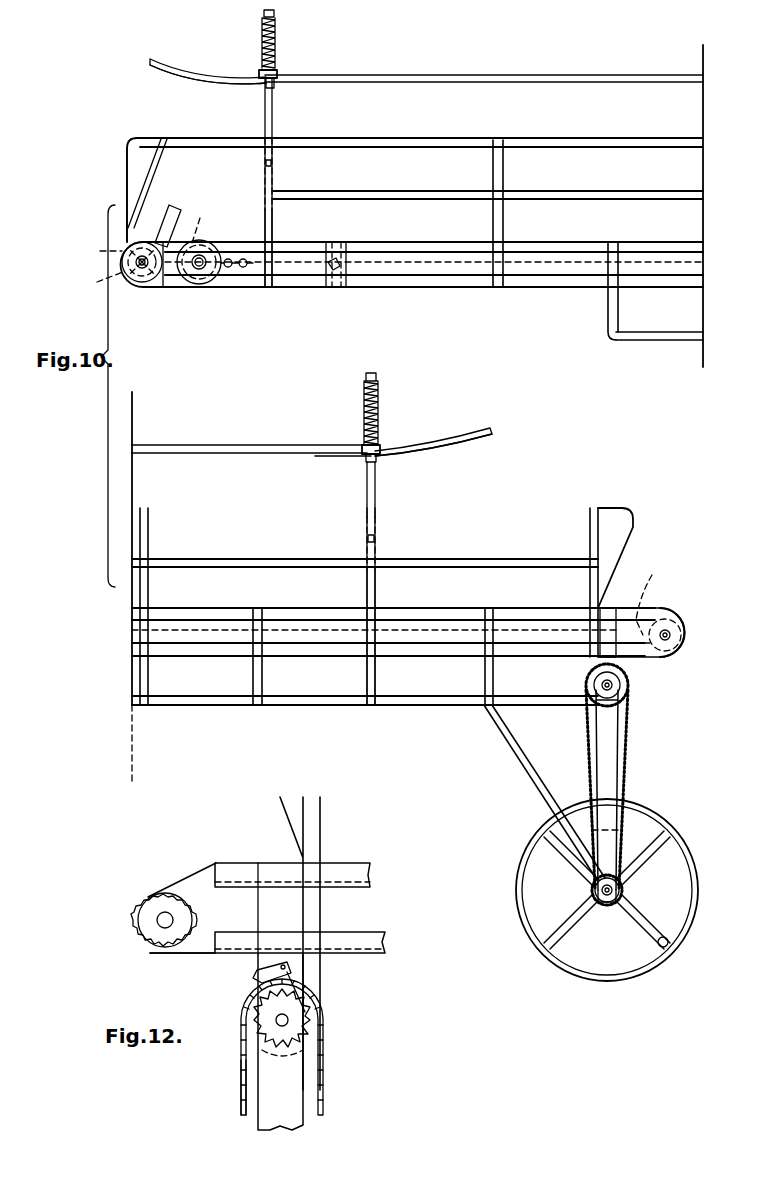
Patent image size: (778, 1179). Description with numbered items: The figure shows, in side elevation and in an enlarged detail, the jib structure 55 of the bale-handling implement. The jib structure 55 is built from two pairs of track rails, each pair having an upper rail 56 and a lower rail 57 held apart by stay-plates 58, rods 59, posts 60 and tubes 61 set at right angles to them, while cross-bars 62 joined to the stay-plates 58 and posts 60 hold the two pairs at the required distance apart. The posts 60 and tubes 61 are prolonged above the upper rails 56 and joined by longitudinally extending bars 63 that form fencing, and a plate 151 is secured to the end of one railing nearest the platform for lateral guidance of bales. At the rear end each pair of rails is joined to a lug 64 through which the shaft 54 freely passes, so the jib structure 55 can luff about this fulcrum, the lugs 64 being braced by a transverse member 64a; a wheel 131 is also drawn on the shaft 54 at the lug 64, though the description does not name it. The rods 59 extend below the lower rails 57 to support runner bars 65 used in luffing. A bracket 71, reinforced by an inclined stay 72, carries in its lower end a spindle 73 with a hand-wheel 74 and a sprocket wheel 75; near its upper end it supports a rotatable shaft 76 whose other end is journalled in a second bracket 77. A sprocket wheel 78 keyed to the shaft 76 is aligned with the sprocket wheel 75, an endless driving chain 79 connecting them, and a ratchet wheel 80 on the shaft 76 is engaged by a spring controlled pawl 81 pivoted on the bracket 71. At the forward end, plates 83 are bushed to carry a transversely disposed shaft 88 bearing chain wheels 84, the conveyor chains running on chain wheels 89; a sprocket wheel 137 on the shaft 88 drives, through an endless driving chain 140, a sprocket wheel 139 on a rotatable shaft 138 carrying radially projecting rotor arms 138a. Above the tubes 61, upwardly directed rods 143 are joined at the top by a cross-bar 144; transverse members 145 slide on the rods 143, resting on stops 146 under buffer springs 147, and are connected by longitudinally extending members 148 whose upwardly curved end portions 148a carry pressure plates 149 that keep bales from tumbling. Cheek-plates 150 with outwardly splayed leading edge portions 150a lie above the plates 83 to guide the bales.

In FIG. 10, the shaft 54 is at (673, 633).
In FIG. 12, the shaft 54 is at (160, 922).
In FIG. 10, the jib structure 55 is at (548, 105).
In FIG. 12, the jib structure 55 is at (252, 850).
In FIG. 10, the upper rail 56 is at (435, 242).
In FIG. 12, the upper rail 56 is at (366, 866).
In FIG. 10, the lower rail 57 is at (459, 290).
In FIG. 12, the lower rail 57 is at (368, 955).
In FIG. 10, the stay-plate 58 is at (331, 288).
In FIG. 10, the rod 59 is at (608, 318).
In FIG. 10, the post 60 is at (503, 211).
In FIG. 12, the post 60 is at (320, 812).
In FIG. 10, the tube 61 is at (273, 218).
In FIG. 10, the cross-bar 62 is at (336, 258).
In FIG. 10, the longitudinally extending bar 63 is at (604, 191).
In FIG. 10, the lug 64 is at (650, 610).
In FIG. 12, the lug 64 is at (188, 870).
In FIG. 10, the transverse member 64a is at (653, 595).
In FIG. 10, the runner bar 65 is at (654, 341).
In FIG. 10, the bracket 71 is at (610, 758).
In FIG. 12, the bracket 71 is at (295, 1090).
In FIG. 10, the inclined stay 72 is at (525, 782).
In FIG. 10, the spindle 73 is at (620, 889).
In FIG. 10, the hand-wheel 74 is at (698, 898).
In FIG. 10, the sprocket wheel 75 is at (607, 903).
In FIG. 10, the rotatable shaft 76 is at (622, 684).
In FIG. 12, the rotatable shaft 76 is at (289, 1020).
In FIG. 10, the second bracket 77 is at (603, 612).
In FIG. 10, the sprocket wheel 78 is at (625, 710).
In FIG. 12, the sprocket wheel 78 is at (245, 1040).
In FIG. 10, the endless driving chain 79 is at (586, 748).
In FIG. 12, the endless driving chain 79 is at (240, 1100).
In FIG. 12, the ratchet wheel 80 is at (305, 1042).
In FIG. 12, the spring controlled pawl 81 is at (295, 975).
In FIG. 10, the forwardly projecting plate 83 is at (167, 288).
In FIG. 10, the chain wheel 84 is at (244, 258).
In FIG. 10, the transversely disposed shaft 88 is at (206, 272).
In FIG. 10, the chain wheel 89 is at (202, 220).
In FIG. 10, the sprocket wheel 131 is at (683, 648).
In FIG. 12, the sprocket wheel 131 is at (150, 902).
In FIG. 10, the sprocket wheel 137 is at (165, 206).
In FIG. 10, the rotatable shaft 138 is at (142, 284).
In FIG. 10, the rotor arm 138a is at (97, 282).
In FIG. 10, the sprocket wheel 139 is at (100, 251).
In FIG. 10, the endless driving chain 140 is at (190, 290).
In FIG. 10, the upwardly directed rod 143 is at (272, 109).
In FIG. 10, the cross-bar 144 is at (378, 377).
In FIG. 10, the transverse member 145 is at (278, 73).
In FIG. 10, the stop 146 is at (262, 84).
In FIG. 10, the buffer spring 147 is at (262, 44).
In FIG. 10, the longitudinally extending member 148 is at (462, 75).
In FIG. 10, the upwardly curved end portion 148a is at (190, 62).
In FIG. 10, the pressure plate 149 is at (200, 84).
In FIG. 10, the cheek-plate 150 is at (203, 150).
In FIG. 10, the splayed leading edge portion 150a is at (127, 147).
In FIG. 10, the plate 151 is at (622, 515).